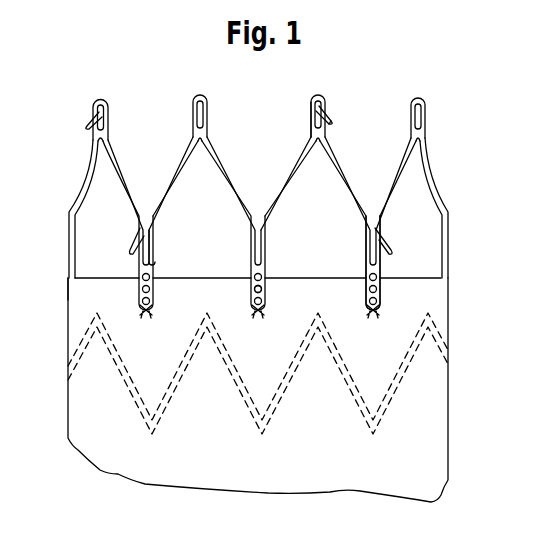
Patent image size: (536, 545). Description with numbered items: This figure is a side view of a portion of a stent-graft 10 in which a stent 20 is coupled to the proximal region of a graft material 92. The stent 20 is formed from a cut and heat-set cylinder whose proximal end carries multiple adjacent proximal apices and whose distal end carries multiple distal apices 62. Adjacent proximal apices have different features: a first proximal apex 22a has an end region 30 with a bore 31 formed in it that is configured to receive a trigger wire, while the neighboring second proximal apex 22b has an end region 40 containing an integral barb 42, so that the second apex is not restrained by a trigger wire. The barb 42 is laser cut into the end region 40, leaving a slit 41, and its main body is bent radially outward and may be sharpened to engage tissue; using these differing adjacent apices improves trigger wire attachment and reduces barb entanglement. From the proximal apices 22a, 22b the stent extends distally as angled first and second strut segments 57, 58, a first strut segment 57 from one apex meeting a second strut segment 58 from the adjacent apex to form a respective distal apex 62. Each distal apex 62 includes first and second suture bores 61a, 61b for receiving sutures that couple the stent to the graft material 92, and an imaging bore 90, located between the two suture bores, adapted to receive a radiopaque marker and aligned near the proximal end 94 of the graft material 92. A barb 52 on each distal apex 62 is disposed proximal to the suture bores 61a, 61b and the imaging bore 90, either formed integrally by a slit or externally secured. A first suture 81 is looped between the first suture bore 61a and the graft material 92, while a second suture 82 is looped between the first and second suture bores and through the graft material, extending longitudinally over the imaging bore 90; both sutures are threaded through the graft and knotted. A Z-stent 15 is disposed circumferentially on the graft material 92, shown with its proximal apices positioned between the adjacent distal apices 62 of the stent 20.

The stent-graft 10 is at (92, 190).
The Z-stent 15 is at (401, 384).
The stent 20 is at (72, 190).
The first proximal apex 22a is at (206, 182).
The second proximal apex 22b is at (320, 183).
The end region 30 is at (193, 110).
The bore 31 is at (203, 112).
The end region 40 is at (310, 112).
The slit 41 is at (325, 120).
The barb 42 is at (333, 117).
The barb 52 is at (391, 251).
The first strut segment 57 is at (173, 178).
The second strut segment 58 is at (228, 177).
The first suture bore 61a is at (251, 296).
The second suture bore 61b is at (265, 273).
The distal apex 62 is at (383, 290).
The first suture 81 is at (260, 316).
The second suture 82 is at (365, 285).
The imaging bore 90 is at (252, 272).
The graft material 92 is at (91, 391).
The proximal end 94 is at (72, 298).